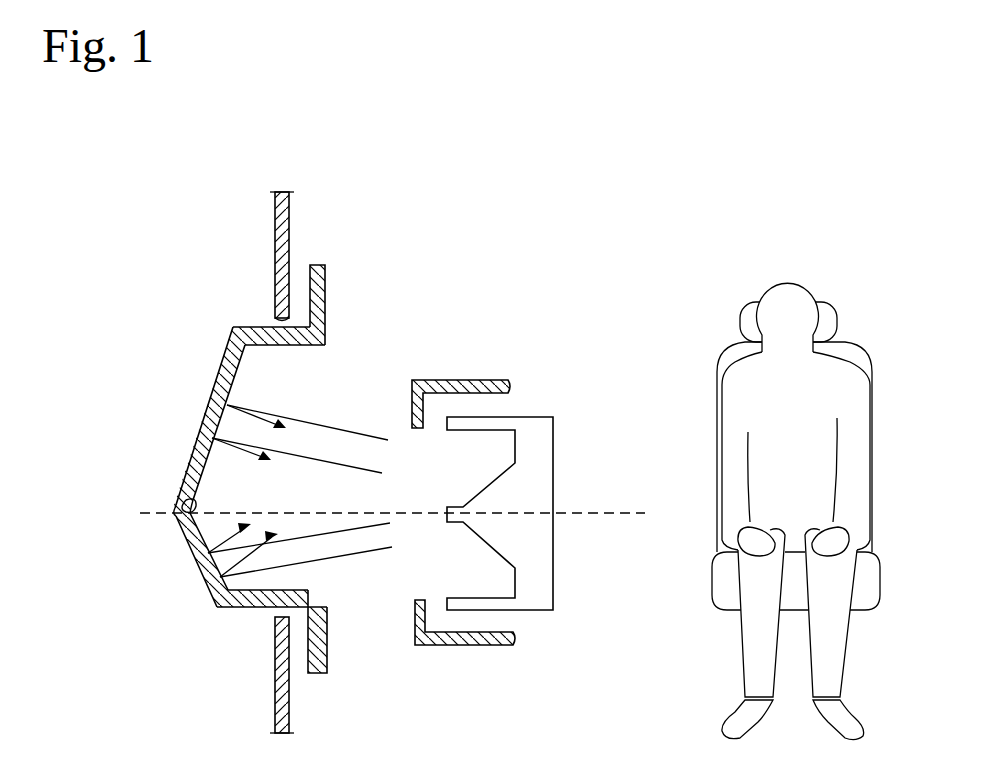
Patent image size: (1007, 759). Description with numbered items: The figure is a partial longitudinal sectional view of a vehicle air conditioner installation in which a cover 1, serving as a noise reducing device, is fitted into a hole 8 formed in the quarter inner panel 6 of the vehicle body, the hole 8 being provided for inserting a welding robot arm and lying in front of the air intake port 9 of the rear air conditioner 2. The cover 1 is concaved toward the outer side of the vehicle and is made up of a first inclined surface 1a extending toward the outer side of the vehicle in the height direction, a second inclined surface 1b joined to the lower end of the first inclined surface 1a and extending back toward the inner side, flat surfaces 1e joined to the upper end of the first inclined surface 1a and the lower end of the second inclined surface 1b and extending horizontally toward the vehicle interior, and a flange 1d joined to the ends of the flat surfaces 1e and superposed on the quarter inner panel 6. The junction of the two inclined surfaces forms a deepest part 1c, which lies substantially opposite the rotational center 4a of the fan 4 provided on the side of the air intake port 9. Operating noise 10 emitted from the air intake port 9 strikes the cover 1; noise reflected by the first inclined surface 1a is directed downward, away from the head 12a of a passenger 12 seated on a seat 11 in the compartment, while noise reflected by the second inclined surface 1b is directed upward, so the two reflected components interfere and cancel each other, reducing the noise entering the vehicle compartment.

The cover 1 is at (212, 352).
The first inclined surface 1a is at (198, 420).
The second inclined surface 1b is at (200, 565).
The deepest part 1c is at (178, 497).
The flange 1d is at (321, 290).
The flat surfaces 1e is at (252, 607).
The rear air conditioner 2 is at (487, 380).
The fan 4 is at (535, 425).
The rotational center 4a is at (607, 514).
The quarter inner panel 6 is at (289, 222).
The hole 8 is at (275, 318).
The air intake port 9 is at (418, 600).
The operating noise 10 is at (353, 431).
The seat 11 is at (876, 363).
The passenger 12 is at (831, 511).
The head 12a is at (808, 320).